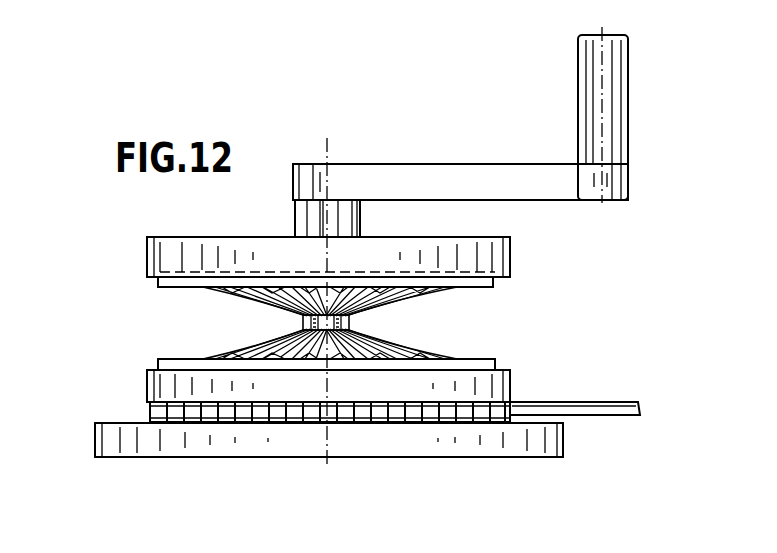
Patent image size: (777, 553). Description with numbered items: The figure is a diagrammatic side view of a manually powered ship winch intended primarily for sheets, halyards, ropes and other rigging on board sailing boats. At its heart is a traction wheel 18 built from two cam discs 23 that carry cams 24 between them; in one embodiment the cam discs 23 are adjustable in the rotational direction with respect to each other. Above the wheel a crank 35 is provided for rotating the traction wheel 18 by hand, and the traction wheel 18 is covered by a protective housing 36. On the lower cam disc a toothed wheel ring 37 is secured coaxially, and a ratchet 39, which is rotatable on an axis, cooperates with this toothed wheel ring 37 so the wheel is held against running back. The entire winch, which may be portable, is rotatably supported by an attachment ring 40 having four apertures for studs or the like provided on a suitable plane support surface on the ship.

The traction wheel 18 is at (192, 320).
The cam discs 23 is at (483, 362).
The cams 24 is at (420, 347).
The crank 35 is at (500, 177).
The protective housing 36 is at (191, 230).
The toothed wheel ring 37 is at (152, 417).
The ratchet 39 is at (592, 407).
The attachment ring 40 is at (110, 440).